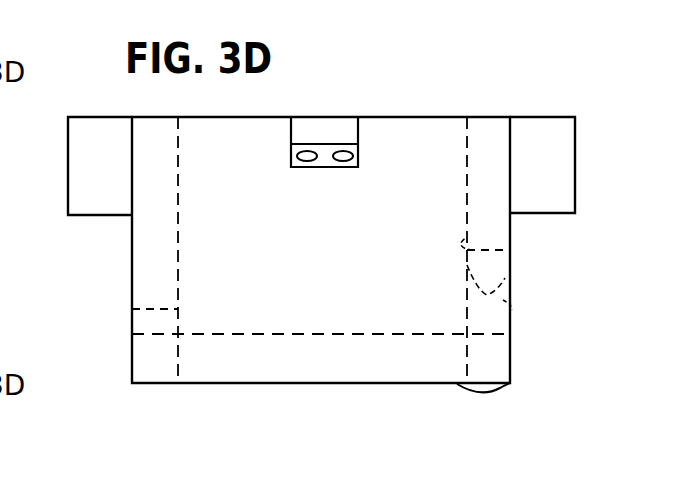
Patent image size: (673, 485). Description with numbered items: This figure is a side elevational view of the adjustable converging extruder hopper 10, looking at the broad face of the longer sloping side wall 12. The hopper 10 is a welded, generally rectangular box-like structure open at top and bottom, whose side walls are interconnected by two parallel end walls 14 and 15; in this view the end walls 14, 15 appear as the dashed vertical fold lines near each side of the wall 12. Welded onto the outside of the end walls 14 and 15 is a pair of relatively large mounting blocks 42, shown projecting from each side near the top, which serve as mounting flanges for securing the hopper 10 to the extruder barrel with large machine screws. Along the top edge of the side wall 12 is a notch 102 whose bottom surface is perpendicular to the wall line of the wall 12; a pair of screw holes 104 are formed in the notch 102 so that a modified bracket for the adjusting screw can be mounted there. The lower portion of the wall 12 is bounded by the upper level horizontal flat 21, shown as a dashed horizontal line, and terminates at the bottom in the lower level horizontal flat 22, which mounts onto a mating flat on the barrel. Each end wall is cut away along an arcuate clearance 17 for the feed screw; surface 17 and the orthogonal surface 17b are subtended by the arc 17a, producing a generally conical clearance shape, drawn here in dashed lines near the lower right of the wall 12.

The adjustable converging extruder hopper 10 is at (482, 74).
The sloping side wall 12 is at (372, 267).
The end wall 14 is at (480, 197).
The end wall 15 is at (168, 243).
The arcuate clearance 17 is at (163, 309).
The arc 17a is at (505, 278).
The surface 17b is at (473, 250).
The upper level horizontal flat 21 is at (374, 338).
The lower level horizontal flat 22 is at (510, 383).
The mounting block 42 is at (72, 184).
The notch 102 is at (323, 147).
The screw hole 104 is at (339, 161).